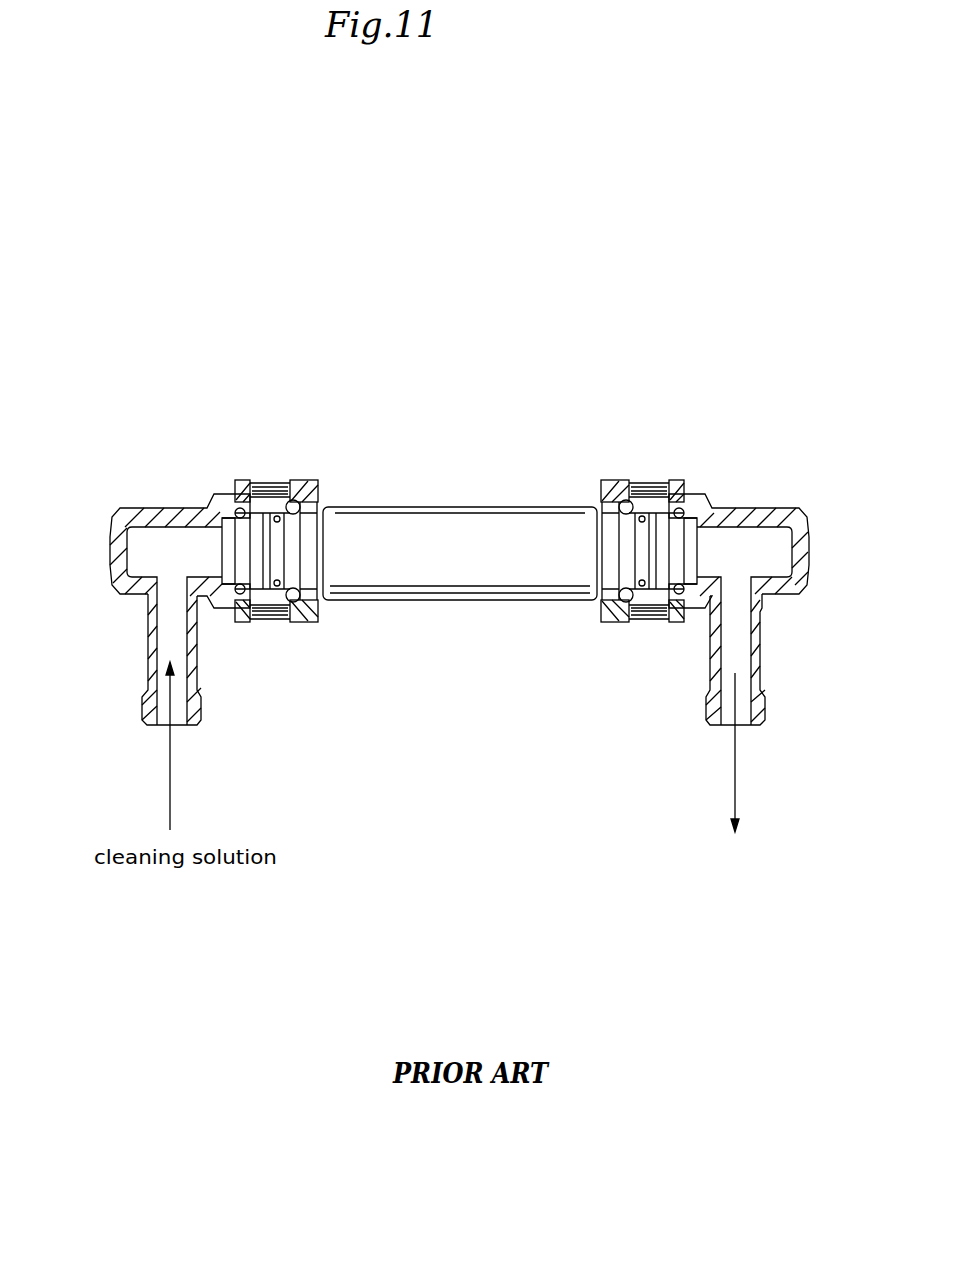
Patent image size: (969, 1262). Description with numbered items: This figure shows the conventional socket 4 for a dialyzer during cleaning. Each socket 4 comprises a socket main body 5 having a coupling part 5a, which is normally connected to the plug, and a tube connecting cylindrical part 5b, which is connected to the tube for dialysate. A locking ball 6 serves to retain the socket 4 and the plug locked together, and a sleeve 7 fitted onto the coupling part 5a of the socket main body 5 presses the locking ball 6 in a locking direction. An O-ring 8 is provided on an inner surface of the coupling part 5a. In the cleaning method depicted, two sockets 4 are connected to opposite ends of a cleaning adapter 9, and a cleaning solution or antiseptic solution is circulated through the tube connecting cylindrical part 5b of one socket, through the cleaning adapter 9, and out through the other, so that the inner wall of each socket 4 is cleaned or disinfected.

The socket 4 is at (134, 494).
The socket main body 5 is at (112, 547).
The coupling part 5a is at (272, 597).
The tube connecting cylindrical part 5b is at (197, 677).
The locking ball 6 is at (300, 505).
The sleeve 7 is at (303, 480).
The O-ring 8 is at (237, 512).
The cleaning adapter 9 is at (452, 530).